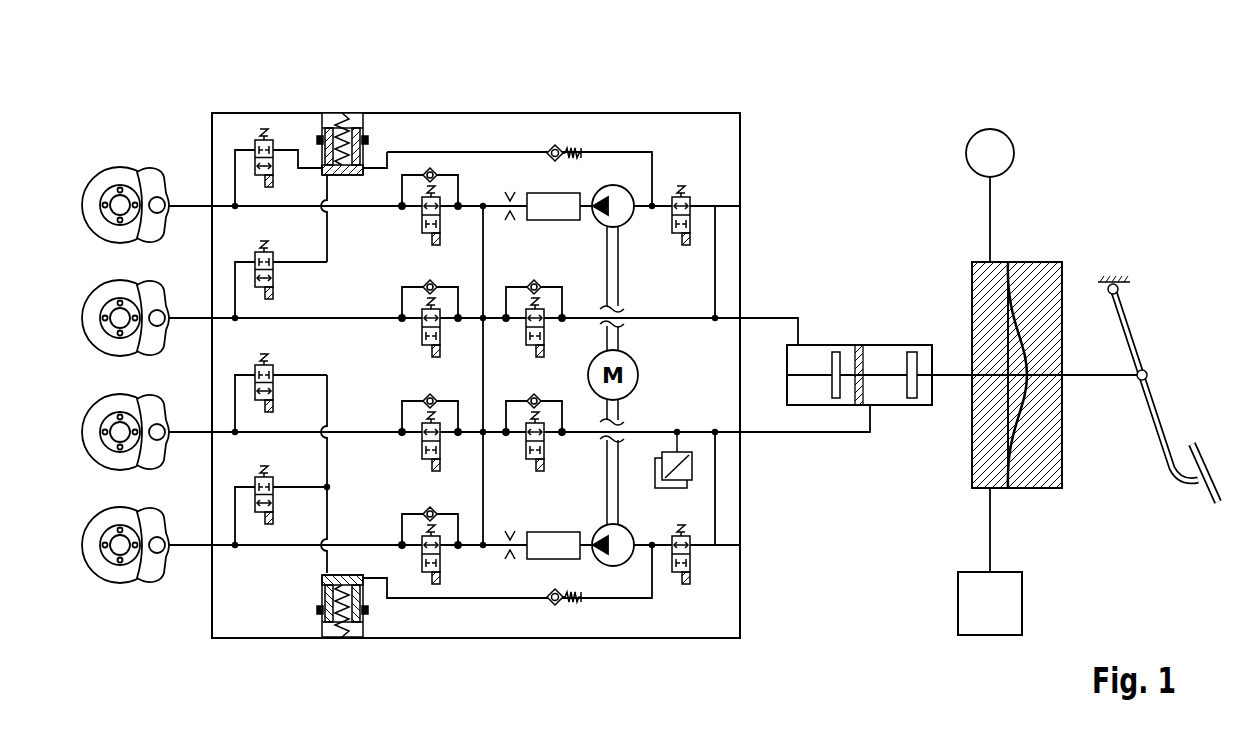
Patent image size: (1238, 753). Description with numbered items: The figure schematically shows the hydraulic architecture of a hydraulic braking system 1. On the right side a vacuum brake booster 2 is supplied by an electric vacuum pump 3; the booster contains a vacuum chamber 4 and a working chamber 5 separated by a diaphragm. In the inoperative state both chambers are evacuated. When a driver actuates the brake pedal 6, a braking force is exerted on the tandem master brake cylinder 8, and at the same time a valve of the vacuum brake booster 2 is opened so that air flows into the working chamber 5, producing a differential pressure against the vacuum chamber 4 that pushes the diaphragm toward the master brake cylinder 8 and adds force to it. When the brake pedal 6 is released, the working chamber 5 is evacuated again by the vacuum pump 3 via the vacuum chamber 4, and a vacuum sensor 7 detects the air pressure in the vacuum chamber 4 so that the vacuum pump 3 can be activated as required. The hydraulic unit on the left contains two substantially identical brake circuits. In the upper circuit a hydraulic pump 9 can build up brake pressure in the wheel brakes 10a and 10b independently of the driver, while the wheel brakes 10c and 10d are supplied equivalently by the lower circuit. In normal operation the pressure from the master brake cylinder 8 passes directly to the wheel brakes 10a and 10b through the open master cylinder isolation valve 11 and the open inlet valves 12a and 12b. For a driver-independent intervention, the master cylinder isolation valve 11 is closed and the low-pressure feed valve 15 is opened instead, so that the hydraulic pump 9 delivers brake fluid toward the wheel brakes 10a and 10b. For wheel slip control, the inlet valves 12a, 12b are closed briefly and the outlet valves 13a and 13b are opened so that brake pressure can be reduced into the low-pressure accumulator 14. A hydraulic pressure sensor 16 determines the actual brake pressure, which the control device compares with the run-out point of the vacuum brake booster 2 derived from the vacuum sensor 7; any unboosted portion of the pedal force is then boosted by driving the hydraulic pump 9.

The hydraulic braking system 1 is at (1023, 72).
The vacuum brake booster 2 is at (1036, 326).
The electric vacuum pump 3 is at (975, 603).
The vacuum chamber 4 is at (990, 294).
The working chamber 5 is at (1033, 292).
The brake pedal 6 is at (1152, 425).
The vacuum sensor 7 is at (966, 153).
The tandem master brake cylinder 8 is at (840, 330).
The hydraulic pump 9 is at (606, 228).
The wheel brake 10a is at (152, 186).
The wheel brake 10b is at (152, 299).
The wheel brake 10c is at (152, 413).
The wheel brake 10d is at (152, 526).
The master cylinder isolation valve 11 is at (525, 333).
The inlet valve 12a is at (422, 216).
The inlet valve 12b is at (422, 328).
The outlet valve 13a is at (276, 160).
The outlet valve 13b is at (276, 272).
The low-pressure accumulator 14 is at (360, 148).
The low-pressure feed valve 15 is at (672, 222).
The hydraulic pressure sensor 16 is at (692, 466).